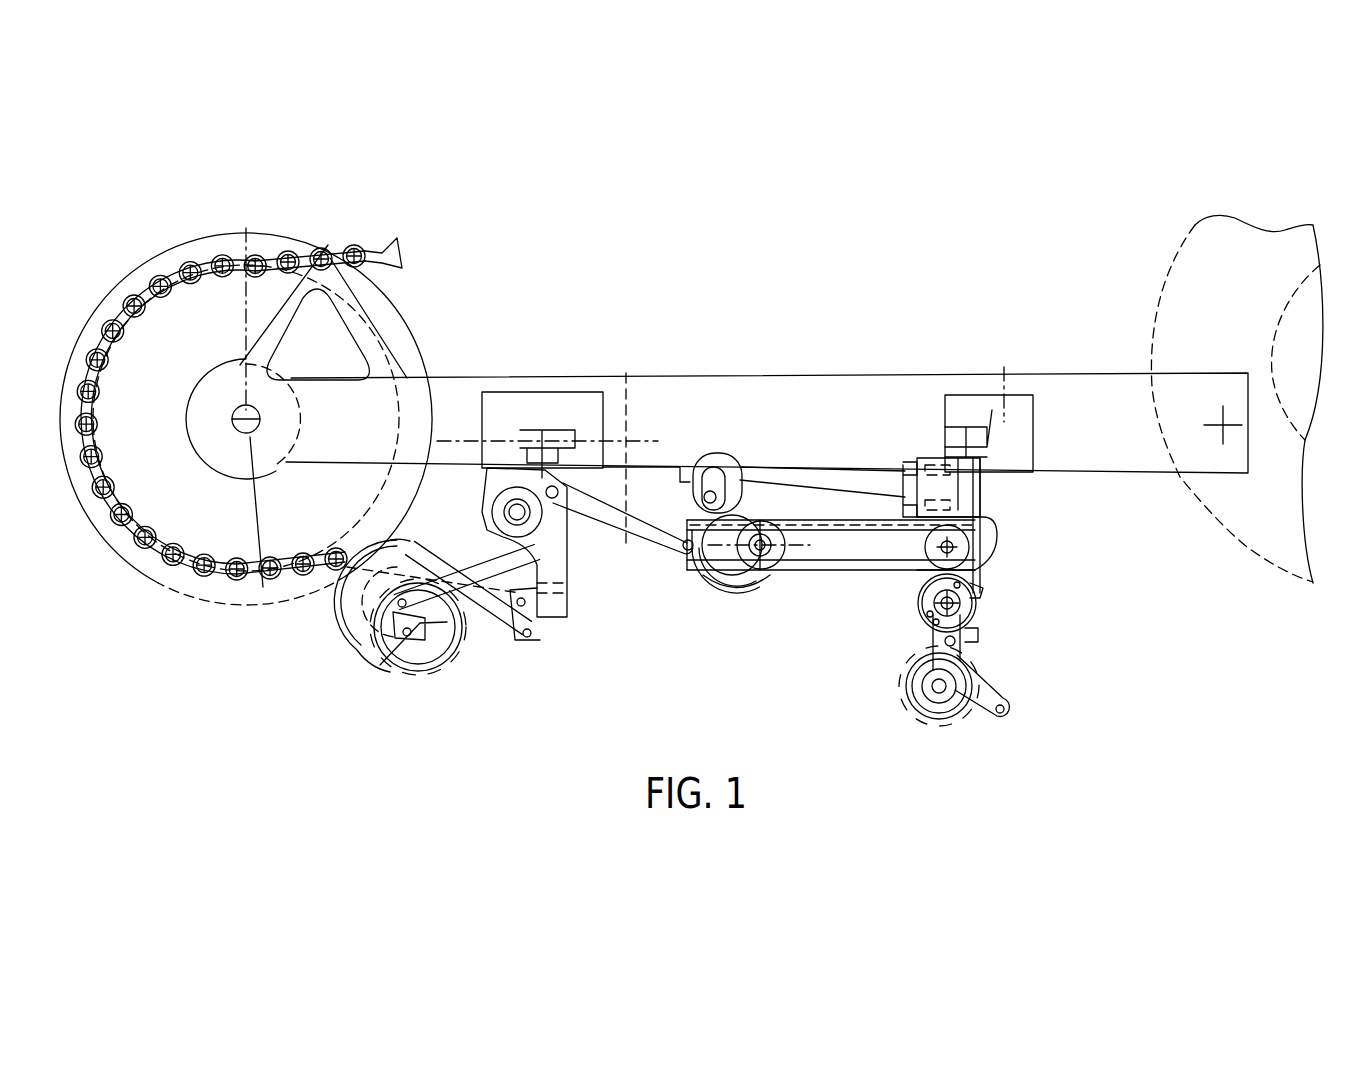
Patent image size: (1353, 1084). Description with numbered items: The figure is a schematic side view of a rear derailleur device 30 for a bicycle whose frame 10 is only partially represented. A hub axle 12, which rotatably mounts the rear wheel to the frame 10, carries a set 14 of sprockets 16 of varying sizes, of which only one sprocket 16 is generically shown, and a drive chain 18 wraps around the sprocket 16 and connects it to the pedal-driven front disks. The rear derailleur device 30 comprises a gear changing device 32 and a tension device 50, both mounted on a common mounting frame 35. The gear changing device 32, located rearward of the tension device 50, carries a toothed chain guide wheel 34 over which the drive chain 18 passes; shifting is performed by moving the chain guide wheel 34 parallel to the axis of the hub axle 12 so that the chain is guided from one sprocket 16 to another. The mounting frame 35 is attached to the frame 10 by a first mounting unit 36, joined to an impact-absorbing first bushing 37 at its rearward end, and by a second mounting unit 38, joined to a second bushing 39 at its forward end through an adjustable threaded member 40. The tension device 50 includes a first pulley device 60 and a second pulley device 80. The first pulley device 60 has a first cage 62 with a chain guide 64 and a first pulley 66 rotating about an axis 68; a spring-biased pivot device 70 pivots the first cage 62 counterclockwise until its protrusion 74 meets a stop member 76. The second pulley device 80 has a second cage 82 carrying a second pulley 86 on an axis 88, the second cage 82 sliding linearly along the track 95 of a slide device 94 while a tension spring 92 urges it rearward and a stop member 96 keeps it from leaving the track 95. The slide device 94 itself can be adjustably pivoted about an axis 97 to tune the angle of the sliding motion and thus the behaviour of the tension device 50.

The frame 10 is at (705, 377).
The hub axle 12 is at (237, 402).
The set of sprockets 14 is at (147, 267).
The sprocket 16 is at (363, 513).
The drive chain 18 is at (338, 256).
The rear derailleur device 30 is at (528, 706).
The gear changing device 32 is at (357, 682).
The chain guide wheel 34 is at (443, 668).
The mounting frame 35 is at (818, 472).
The first mounting unit 36 is at (570, 392).
The first bushing 37 is at (520, 470).
The second mounting unit 38 is at (1023, 395).
The second bushing 39 is at (943, 452).
The threaded member 40 is at (962, 423).
The tension device 50 is at (755, 683).
The first pulley device 60 is at (895, 715).
The first cage 62 is at (970, 720).
The chain guide 64 is at (1007, 708).
The first pulley 66 is at (905, 675).
The axis 68 is at (952, 682).
The pivot device 70 is at (1003, 594).
The protrusion 74 is at (977, 638).
The stop member 76 is at (973, 590).
The second pulley device 80 is at (720, 619).
The second cage 82 is at (730, 585).
The second pulley 86 is at (780, 580).
The axis 88 is at (757, 575).
The tension spring 92 is at (648, 537).
The slide device 94 is at (880, 573).
The track 95 is at (822, 533).
The stop member 96 is at (997, 531).
The axis 97 is at (952, 543).